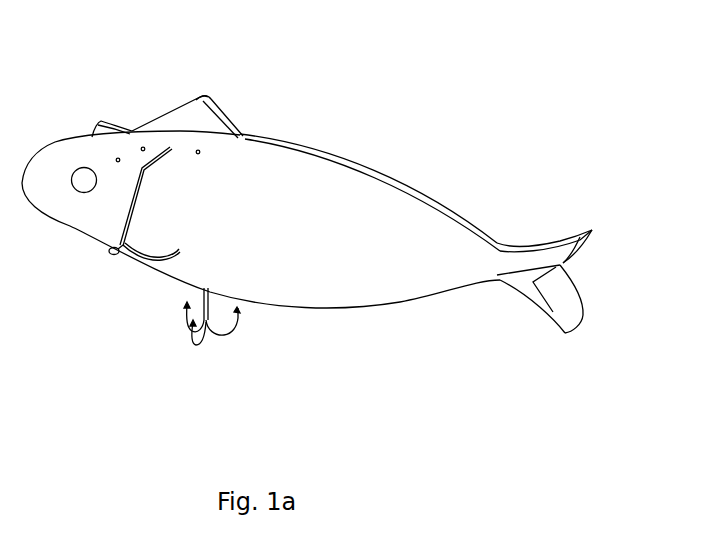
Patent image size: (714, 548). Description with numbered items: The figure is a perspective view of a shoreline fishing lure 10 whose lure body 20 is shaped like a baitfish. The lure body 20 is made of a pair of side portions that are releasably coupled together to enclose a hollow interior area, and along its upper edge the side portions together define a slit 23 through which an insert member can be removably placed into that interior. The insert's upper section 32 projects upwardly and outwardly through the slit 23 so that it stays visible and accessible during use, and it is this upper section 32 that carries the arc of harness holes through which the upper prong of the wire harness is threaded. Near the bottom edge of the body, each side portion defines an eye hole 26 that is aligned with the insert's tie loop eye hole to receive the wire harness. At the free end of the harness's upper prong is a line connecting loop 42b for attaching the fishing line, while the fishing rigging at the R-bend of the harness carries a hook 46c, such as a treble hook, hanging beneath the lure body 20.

The fishing lure 10 is at (478, 85).
The lure body 20 is at (430, 232).
The slit 23 is at (248, 130).
The upper section 32 is at (195, 115).
The eye hole 26 is at (183, 250).
The line connecting loop 42b is at (113, 258).
The hook 46c is at (230, 342).